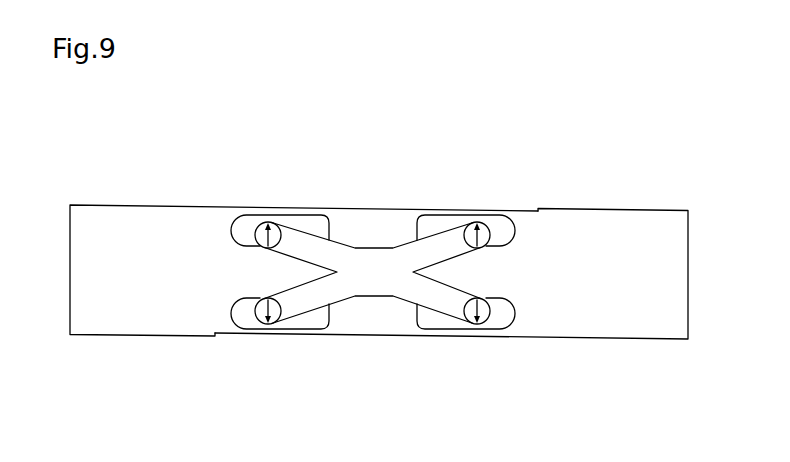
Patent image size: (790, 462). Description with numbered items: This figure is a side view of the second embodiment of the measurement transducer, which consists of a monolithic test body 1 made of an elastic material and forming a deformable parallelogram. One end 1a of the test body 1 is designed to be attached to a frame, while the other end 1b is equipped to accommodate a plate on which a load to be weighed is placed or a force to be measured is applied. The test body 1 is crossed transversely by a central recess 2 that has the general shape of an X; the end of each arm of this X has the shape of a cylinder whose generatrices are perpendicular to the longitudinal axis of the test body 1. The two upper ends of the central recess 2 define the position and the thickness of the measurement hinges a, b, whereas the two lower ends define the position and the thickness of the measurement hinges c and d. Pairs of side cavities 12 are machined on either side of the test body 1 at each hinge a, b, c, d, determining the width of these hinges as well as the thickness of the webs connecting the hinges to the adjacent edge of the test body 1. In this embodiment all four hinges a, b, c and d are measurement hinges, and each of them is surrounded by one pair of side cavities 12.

The monolithic test body 1 is at (379, 273).
The end attached to a frame 1a is at (133, 340).
The end accommodating a plate 1b is at (633, 208).
The central recess 2 is at (379, 233).
The side cavities 12 is at (246, 229).
The measurement hinge a is at (266, 247).
The measurement hinge b is at (480, 248).
The measurement hinge c is at (265, 300).
The measurement hinge d is at (480, 300).